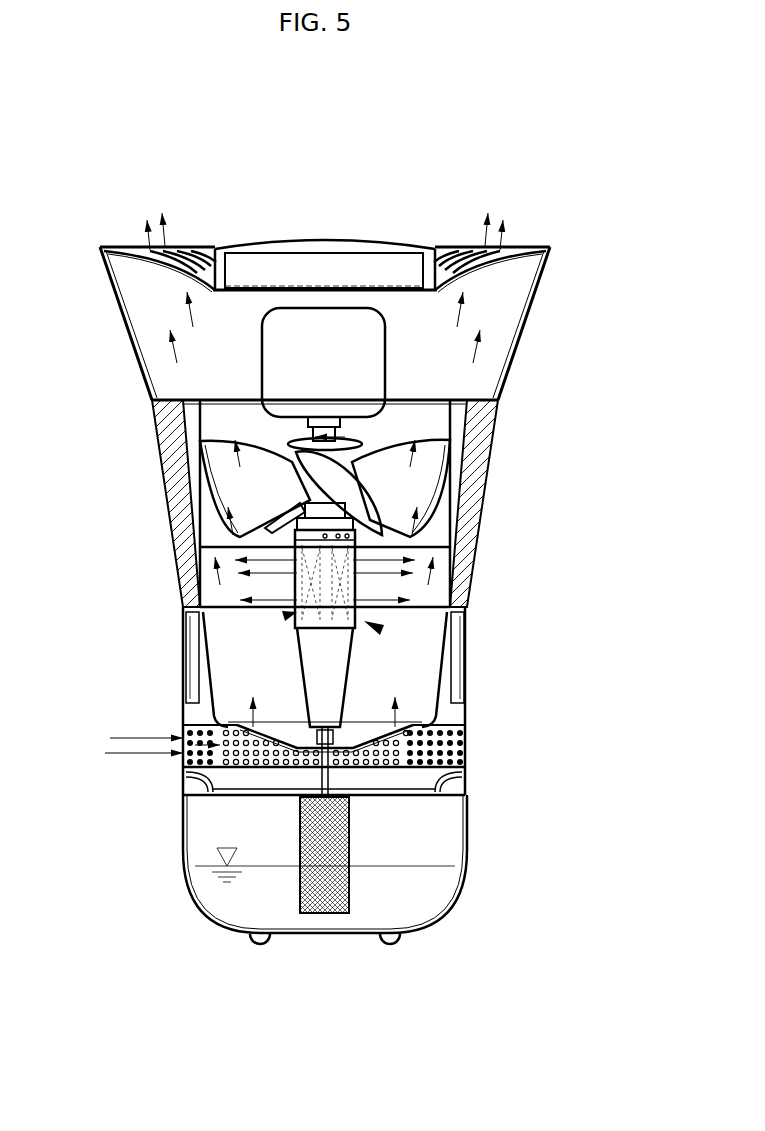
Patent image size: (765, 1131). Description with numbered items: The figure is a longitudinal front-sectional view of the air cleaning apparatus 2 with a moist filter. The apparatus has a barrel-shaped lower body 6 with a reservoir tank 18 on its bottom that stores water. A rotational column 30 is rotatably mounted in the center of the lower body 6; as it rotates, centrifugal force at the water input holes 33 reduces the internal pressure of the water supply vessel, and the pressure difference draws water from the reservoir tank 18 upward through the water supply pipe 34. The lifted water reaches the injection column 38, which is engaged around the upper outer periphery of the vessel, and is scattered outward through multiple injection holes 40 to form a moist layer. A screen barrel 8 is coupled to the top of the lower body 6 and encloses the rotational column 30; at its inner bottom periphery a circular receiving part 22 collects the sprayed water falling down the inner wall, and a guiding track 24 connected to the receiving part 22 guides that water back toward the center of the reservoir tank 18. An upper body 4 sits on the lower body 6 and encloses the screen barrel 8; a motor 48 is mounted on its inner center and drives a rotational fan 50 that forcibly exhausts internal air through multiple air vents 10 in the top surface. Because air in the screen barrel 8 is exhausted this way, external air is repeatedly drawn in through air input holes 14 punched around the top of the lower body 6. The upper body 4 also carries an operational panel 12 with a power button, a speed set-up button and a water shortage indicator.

The air cleaning apparatus 2 is at (439, 190).
The upper body 4 is at (137, 365).
The lower body 6 is at (188, 871).
The screen barrel 8 is at (450, 633).
The air vents 10 is at (200, 247).
The operational panel 12 is at (340, 247).
The air input holes 14 is at (463, 745).
The reservoir tank 18 is at (218, 828).
The receiving part 22 is at (458, 728).
The guiding track 24 is at (457, 768).
The rotational column 30 is at (384, 629).
The water input holes 33 is at (293, 531).
The water supply pipe 34 is at (350, 873).
The injection column 38 is at (283, 617).
The injection holes 40 is at (293, 558).
The motor 48 is at (370, 345).
The rotational fan 50 is at (408, 500).